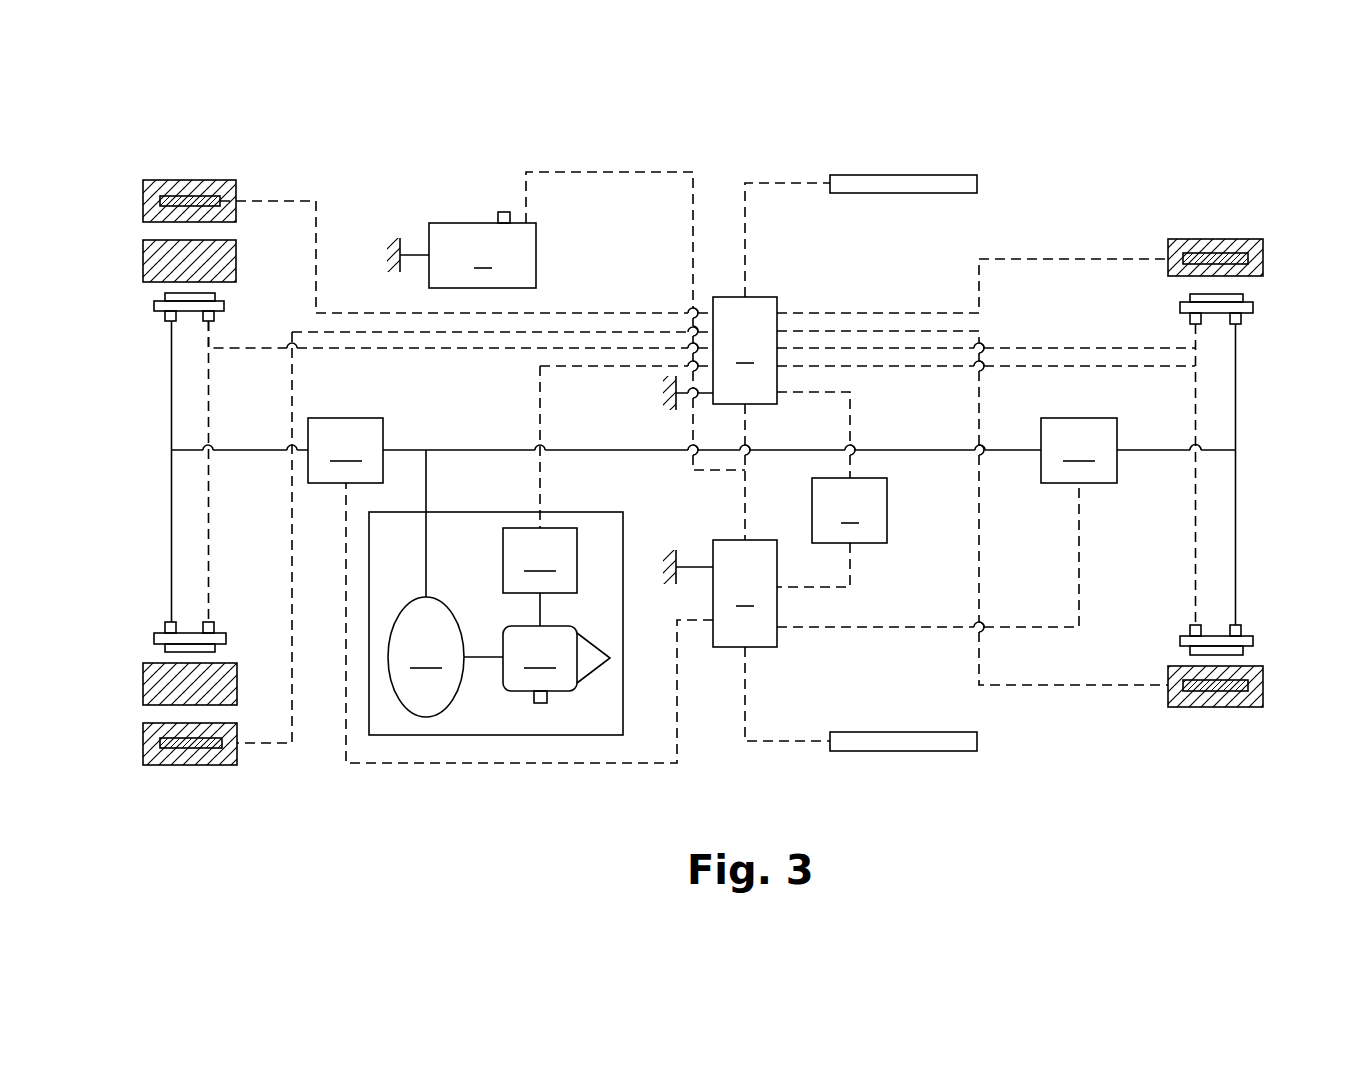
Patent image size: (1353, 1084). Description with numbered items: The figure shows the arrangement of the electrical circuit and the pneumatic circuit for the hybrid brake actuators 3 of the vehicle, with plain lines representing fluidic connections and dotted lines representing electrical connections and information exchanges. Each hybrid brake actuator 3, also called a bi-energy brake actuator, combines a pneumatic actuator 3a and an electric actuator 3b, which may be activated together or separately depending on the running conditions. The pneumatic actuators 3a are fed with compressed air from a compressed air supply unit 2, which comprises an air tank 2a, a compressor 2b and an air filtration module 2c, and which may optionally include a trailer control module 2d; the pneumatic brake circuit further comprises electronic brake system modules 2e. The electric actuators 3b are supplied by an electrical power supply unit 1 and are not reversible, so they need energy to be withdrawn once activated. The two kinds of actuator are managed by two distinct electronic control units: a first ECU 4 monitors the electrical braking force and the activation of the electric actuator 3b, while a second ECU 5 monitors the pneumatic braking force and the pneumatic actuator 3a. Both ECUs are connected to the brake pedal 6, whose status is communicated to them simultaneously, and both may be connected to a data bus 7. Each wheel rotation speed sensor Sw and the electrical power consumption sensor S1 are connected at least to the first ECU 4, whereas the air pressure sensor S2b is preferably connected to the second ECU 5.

The electrical power supply unit 1 is at (482, 255).
The electrical power consumption sensor S1 is at (503, 209).
The compressed air supply unit 2 is at (511, 626).
The air tank 2a is at (426, 657).
The compressor 2b is at (540, 658).
The air filtration module 2c is at (592, 667).
The trailer control module 2d is at (540, 560).
The electronic brake system module 2e is at (712, 450).
The air pressure sensor S2b is at (541, 707).
The hybrid brake actuator 3 is at (150, 299).
The pneumatic actuator 3a is at (150, 322).
The electric actuator 3b is at (228, 321).
The first ECU 4 is at (745, 350).
The second ECU 5 is at (745, 593).
The brake pedal 6 is at (849, 510).
The data bus 7 is at (875, 166).
The wheel rotation speed sensor Sw is at (190, 186).